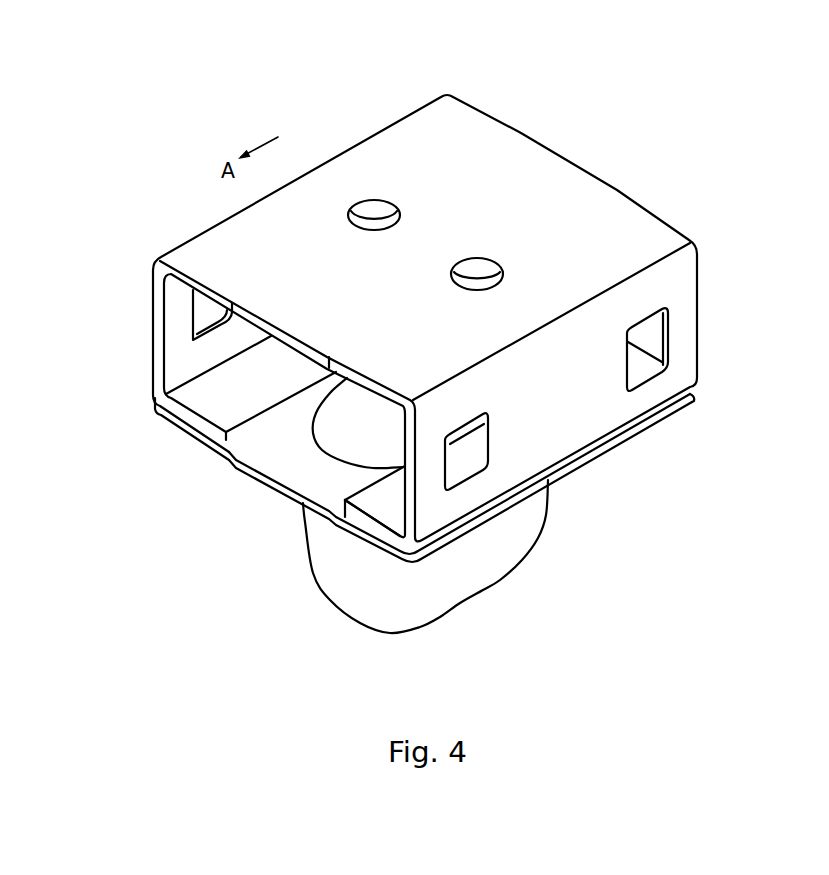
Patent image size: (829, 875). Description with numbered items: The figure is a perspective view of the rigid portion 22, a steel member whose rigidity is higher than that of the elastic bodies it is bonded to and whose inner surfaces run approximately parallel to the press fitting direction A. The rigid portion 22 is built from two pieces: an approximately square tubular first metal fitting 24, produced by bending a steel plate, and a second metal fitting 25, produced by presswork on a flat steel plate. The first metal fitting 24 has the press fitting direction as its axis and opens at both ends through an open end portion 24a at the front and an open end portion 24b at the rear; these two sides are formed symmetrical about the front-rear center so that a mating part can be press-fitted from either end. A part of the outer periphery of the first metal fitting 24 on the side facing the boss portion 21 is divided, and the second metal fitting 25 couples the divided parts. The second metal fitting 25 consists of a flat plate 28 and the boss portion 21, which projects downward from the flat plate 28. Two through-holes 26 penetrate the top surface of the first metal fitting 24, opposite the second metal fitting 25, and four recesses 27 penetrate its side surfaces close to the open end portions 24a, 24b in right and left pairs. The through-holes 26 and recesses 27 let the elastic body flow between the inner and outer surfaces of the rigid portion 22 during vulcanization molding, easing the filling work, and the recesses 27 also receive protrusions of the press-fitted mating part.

The boss portion 21 is at (320, 534).
The rigid portion 22 is at (604, 77).
The first metal fitting 24 is at (425, 305).
The open end portion 24a is at (160, 303).
The open end portion 24b is at (647, 209).
The second metal fitting 25 is at (178, 500).
The through-holes 26 is at (374, 212).
The recesses 27 is at (207, 338).
The flat plate 28 is at (281, 457).